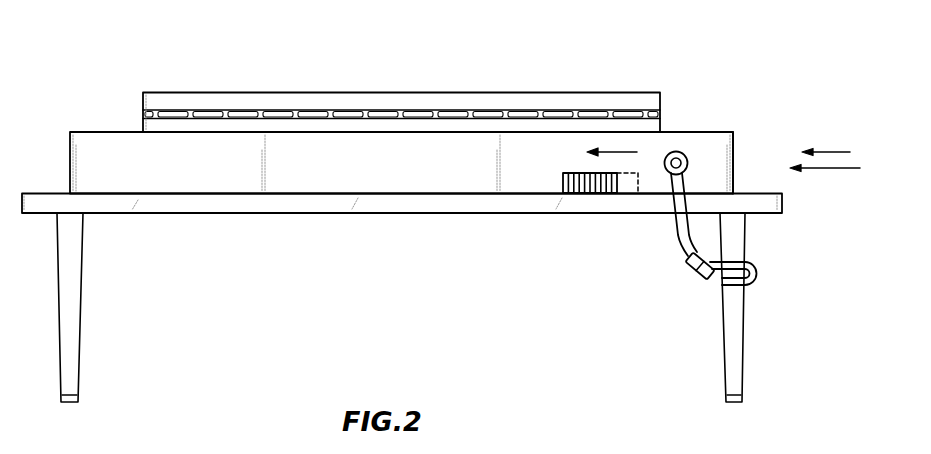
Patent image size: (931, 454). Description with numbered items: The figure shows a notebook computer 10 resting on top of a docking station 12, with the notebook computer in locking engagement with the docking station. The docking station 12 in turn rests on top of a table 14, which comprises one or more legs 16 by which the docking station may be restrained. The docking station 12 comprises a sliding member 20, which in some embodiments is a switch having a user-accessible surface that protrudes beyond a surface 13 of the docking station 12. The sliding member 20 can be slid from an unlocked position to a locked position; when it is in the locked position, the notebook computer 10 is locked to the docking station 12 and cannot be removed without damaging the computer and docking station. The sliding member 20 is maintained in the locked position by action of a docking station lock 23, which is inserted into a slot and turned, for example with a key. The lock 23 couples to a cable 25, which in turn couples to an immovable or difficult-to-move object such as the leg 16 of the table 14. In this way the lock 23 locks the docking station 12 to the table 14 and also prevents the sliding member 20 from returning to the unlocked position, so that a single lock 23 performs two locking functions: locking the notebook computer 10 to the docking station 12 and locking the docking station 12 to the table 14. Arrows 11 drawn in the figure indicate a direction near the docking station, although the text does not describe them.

The notebook computer 10 is at (152, 100).
The direction of force arrows 11 is at (817, 172).
The docking station 12 is at (82, 148).
The surface of the docking station 13 is at (715, 151).
The table 14 is at (48, 203).
The leg 16 is at (747, 303).
The sliding member 20 is at (575, 178).
The docking station lock 23 is at (678, 152).
The cable 25 is at (674, 240).